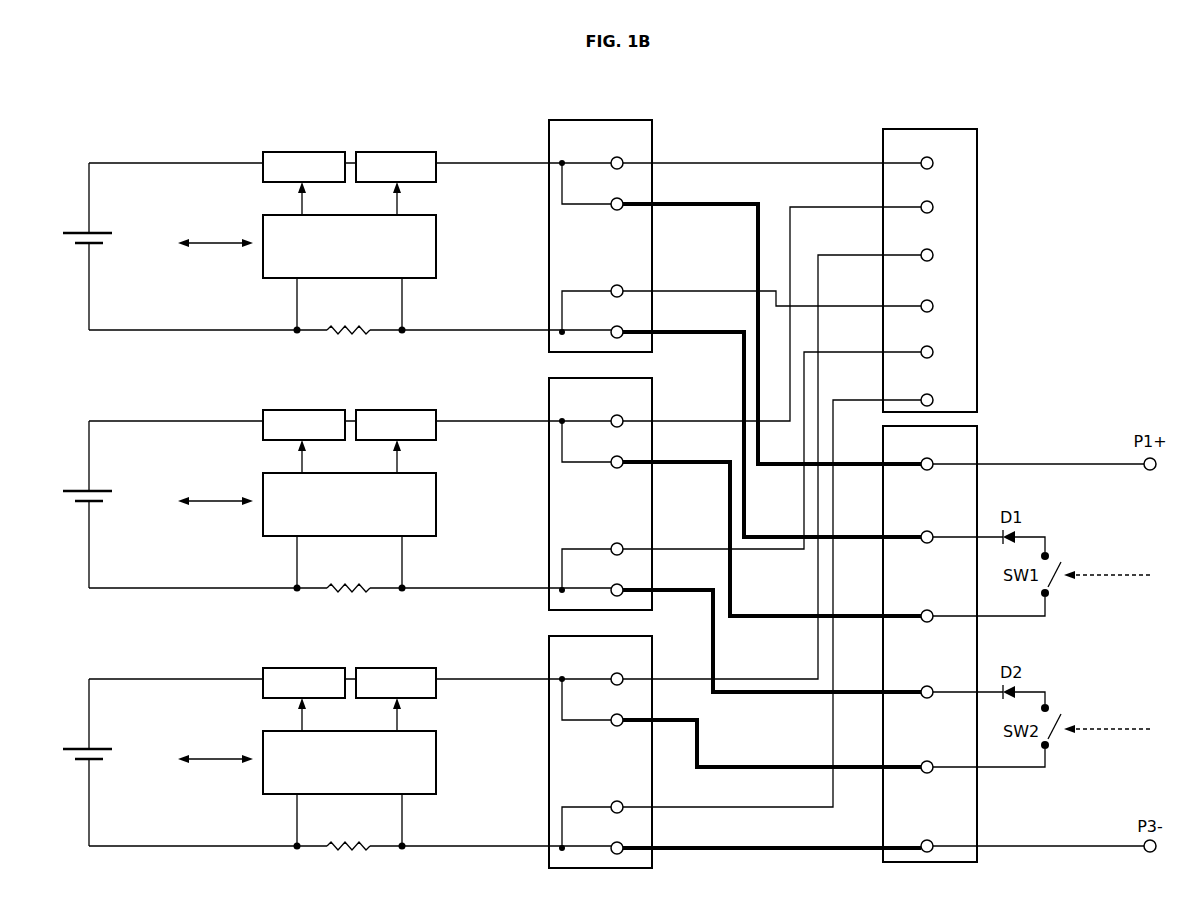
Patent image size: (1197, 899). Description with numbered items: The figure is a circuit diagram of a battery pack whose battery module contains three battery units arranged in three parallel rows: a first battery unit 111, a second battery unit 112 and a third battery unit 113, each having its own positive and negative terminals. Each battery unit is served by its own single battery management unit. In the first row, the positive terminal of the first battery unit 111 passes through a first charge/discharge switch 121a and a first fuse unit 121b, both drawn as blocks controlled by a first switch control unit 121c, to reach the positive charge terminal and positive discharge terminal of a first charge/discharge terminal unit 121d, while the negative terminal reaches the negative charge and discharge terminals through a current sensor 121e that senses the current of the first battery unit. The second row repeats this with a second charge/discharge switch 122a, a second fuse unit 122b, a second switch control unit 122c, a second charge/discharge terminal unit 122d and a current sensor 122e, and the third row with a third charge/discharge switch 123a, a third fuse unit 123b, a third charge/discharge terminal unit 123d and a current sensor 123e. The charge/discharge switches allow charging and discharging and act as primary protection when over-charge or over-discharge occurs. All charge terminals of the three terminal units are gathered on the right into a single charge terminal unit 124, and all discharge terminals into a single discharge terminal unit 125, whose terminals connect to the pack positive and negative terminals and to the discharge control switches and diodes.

The first battery unit 111 is at (113, 241).
The second battery unit 112 is at (113, 499).
The third battery unit 113 is at (113, 757).
The first charge/discharge switch 121a is at (303, 152).
The first fuse unit 121b is at (394, 152).
The first switch control unit 121c is at (437, 248).
The first charge/discharge terminal unit 121d is at (654, 136).
The current sensor 121e is at (350, 325).
The second charge/discharge switch 122a is at (303, 410).
The second fuse unit 122b is at (394, 410).
The second switch control unit 122c is at (437, 506).
The second charge/discharge terminal unit 122d is at (654, 394).
The current sensor 122e is at (350, 583).
The third charge/discharge switch 123a is at (303, 668).
The third fuse unit 123b is at (394, 668).
The third charge/discharge terminal unit 123d is at (654, 652).
The current sensor 123e is at (350, 841).
The charge terminal unit 124 is at (979, 142).
The discharge terminal unit 125 is at (979, 439).